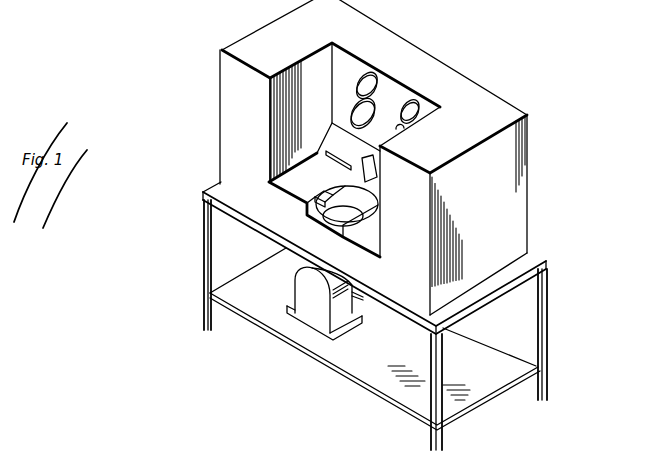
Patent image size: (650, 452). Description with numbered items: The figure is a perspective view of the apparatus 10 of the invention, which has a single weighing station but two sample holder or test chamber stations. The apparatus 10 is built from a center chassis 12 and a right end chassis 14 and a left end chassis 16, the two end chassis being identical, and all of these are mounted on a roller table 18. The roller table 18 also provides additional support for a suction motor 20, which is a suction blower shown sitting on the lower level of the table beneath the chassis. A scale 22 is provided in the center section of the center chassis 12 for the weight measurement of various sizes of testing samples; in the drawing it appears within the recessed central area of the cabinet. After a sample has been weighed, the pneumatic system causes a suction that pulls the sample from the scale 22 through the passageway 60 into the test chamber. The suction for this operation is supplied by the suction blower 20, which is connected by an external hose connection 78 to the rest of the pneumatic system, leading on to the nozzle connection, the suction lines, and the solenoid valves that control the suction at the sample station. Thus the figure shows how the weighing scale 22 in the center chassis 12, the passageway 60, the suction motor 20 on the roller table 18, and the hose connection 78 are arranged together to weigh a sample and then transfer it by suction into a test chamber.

The apparatus 10 is at (474, 80).
The center chassis 12 is at (422, 50).
The right end chassis 14 is at (455, 160).
The left end chassis 16 is at (248, 35).
The roller table 18 is at (548, 293).
The suction motor 20 is at (297, 290).
The scale 22 is at (306, 212).
The passageway 60 is at (330, 192).
The external hose connection 78 is at (358, 297).